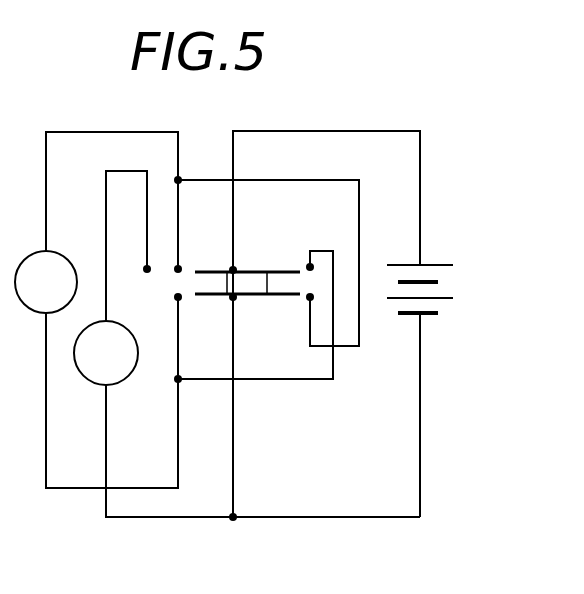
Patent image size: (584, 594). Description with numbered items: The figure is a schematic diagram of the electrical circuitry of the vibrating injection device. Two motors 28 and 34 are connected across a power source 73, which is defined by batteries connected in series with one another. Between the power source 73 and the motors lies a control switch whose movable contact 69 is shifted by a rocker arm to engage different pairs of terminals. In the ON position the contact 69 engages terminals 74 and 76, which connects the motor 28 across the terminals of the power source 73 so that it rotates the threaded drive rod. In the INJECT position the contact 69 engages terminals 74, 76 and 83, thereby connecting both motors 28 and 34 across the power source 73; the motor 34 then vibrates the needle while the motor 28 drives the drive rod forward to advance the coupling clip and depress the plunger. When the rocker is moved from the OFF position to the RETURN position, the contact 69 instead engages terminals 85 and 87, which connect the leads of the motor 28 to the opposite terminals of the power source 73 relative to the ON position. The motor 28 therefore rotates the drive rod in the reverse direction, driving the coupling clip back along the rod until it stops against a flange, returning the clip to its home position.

The motor 28 is at (32, 252).
The motor 34 is at (118, 384).
The contact 69 is at (250, 296).
The power source 73 is at (426, 263).
The terminal 74 is at (182, 266).
The terminal 76 is at (182, 301).
The terminal 83 is at (146, 273).
The terminal 85 is at (310, 264).
The terminal 87 is at (308, 300).